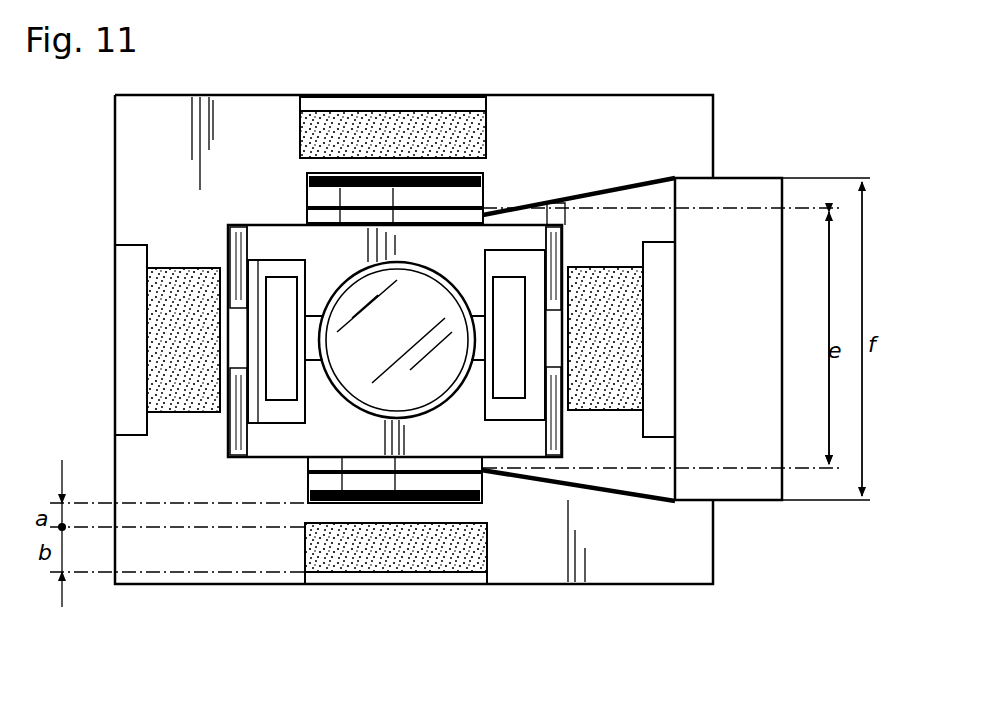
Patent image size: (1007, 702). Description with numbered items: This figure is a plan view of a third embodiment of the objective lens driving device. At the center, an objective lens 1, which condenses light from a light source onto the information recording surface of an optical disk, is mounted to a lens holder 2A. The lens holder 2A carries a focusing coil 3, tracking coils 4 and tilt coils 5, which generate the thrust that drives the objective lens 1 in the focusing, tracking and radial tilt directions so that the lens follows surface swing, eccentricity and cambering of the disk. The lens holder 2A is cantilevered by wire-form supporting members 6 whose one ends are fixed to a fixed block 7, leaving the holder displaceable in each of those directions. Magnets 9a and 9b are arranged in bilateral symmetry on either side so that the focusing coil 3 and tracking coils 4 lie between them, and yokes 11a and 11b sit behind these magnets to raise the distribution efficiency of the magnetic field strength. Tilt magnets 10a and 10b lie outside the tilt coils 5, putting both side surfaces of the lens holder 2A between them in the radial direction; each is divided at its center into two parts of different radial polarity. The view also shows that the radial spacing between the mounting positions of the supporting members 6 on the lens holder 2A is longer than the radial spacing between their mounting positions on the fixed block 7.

The objective lens 1 is at (361, 296).
The lens holder 2A is at (262, 228).
The focusing coil 3 is at (532, 403).
The tracking coil 4 is at (557, 237).
The tilt coil 5 is at (353, 174).
The supporting member 6 is at (620, 186).
The fixed block 7 is at (757, 303).
The magnet 9a is at (147, 290).
The magnet 9b is at (620, 302).
The tilt magnet 10a is at (328, 555).
The tilt magnet 10b is at (428, 132).
The yoke 11a is at (123, 343).
The yoke 11b is at (658, 412).